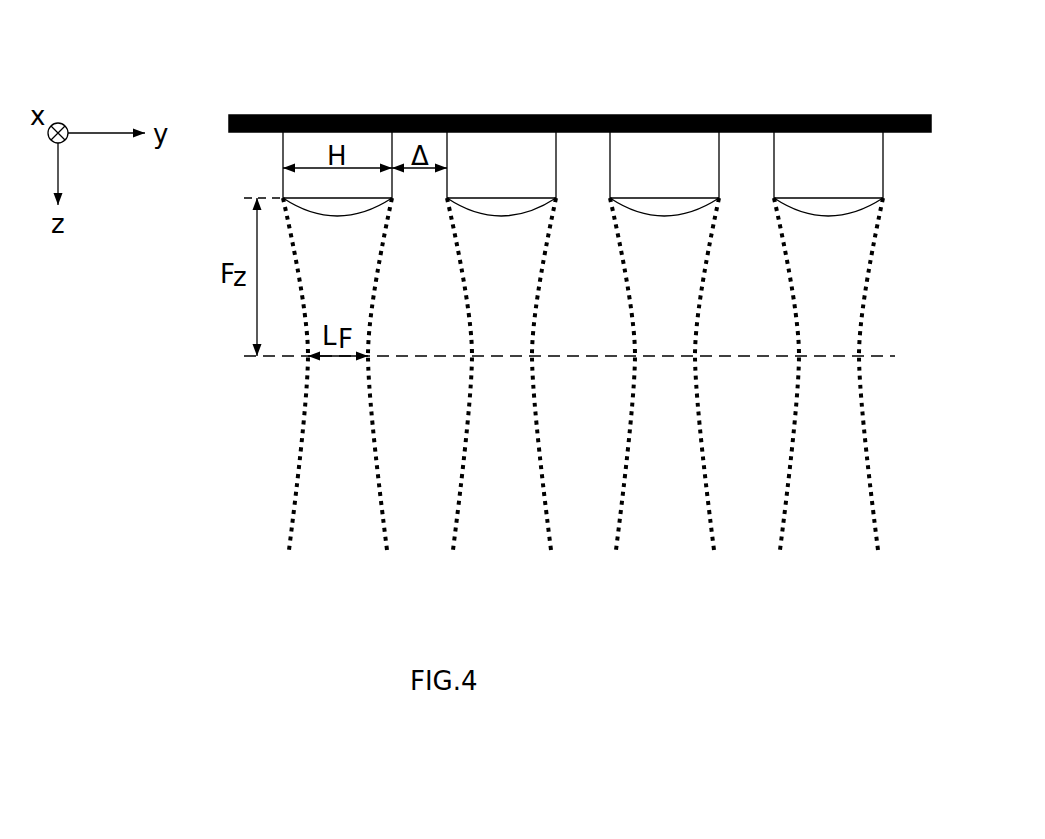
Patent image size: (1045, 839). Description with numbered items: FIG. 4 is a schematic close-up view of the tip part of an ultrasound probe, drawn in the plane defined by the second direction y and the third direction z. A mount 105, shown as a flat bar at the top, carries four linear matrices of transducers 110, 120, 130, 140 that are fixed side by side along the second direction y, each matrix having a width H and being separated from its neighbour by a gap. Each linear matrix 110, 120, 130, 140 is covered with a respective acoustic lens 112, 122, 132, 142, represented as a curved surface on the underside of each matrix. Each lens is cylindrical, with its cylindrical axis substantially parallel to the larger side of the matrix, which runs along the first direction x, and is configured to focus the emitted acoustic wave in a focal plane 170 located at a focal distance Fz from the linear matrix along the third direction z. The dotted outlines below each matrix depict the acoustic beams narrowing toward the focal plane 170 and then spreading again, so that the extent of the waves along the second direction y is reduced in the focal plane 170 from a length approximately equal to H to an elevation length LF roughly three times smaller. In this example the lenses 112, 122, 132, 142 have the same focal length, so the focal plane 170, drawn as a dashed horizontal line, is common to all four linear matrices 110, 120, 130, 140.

The mount 105 is at (250, 131).
The linear matrix of transducers 110 is at (362, 147).
The acoustic lens 112 is at (337, 205).
The linear matrix of transducers 120 is at (528, 152).
The acoustic lens 122 is at (501, 205).
The linear matrix of transducers 130 is at (690, 148).
The acoustic lens 132 is at (664, 205).
The linear matrix of transducers 140 is at (859, 145).
The acoustic lens 142 is at (828, 205).
The focal plane 170 is at (870, 357).